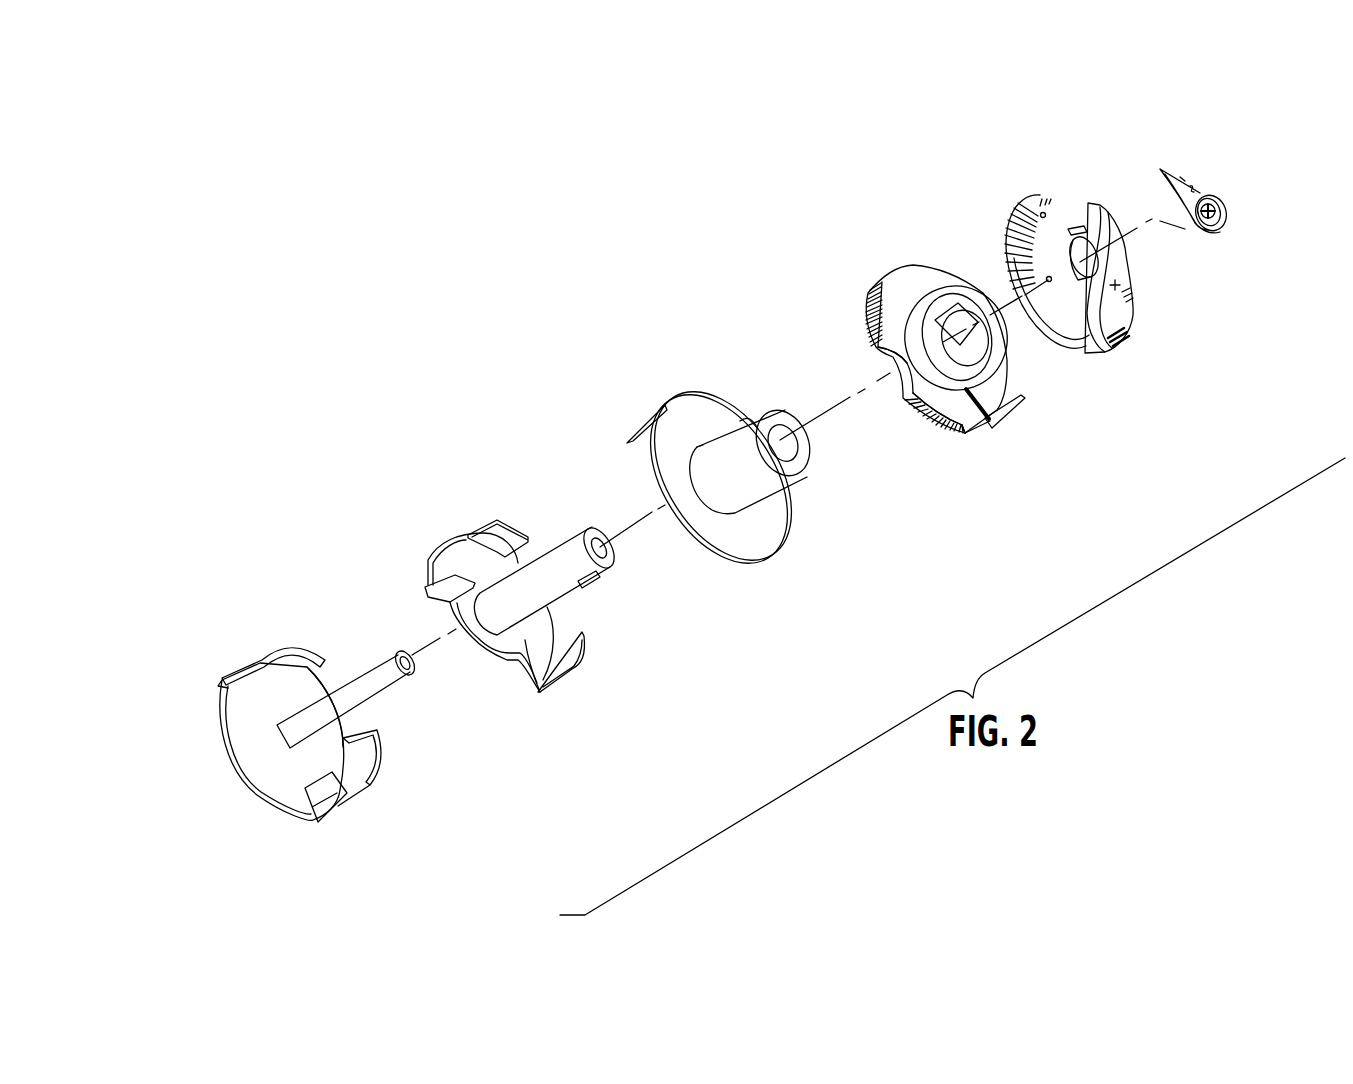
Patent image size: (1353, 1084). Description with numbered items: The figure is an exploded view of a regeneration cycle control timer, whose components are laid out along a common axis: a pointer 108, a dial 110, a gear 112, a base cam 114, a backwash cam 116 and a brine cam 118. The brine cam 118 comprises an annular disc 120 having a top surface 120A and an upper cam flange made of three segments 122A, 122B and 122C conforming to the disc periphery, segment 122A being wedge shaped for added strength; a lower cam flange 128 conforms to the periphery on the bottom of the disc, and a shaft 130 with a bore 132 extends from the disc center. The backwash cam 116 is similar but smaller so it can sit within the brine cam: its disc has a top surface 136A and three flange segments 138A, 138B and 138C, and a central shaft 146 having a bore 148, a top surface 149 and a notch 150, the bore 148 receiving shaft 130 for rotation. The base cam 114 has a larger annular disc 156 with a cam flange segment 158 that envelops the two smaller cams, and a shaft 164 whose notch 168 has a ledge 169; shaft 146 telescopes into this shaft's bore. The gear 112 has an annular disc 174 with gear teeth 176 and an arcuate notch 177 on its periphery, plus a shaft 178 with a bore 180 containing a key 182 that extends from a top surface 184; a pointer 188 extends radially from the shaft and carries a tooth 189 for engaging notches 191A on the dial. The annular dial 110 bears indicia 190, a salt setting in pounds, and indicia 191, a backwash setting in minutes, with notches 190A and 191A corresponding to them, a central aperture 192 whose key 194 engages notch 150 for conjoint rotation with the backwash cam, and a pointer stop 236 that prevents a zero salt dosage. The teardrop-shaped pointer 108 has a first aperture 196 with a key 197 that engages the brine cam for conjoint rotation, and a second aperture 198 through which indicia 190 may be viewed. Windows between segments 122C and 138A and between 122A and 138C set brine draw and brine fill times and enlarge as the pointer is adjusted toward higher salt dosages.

The pointer 108 is at (1262, 249).
The dial 110 is at (1115, 391).
The gear 112 is at (908, 470).
The base cam 114 is at (730, 610).
The backwash cam 116 is at (446, 503).
The brine cam 118 is at (202, 783).
The annular disc 120 is at (287, 806).
The top surface 120A is at (257, 740).
The upper cam flange segment 122A is at (287, 650).
The upper cam flange segment 122B is at (365, 788).
The upper cam flange segment 122C is at (325, 800).
The lower cam flange 128 is at (228, 680).
The shaft 130 is at (345, 673).
The bore 132 is at (410, 670).
The top surface 136A is at (522, 645).
The cam flange segment 138A is at (420, 585).
The cam flange segment 138B is at (432, 555).
The cam flange segment 138C is at (582, 637).
The shaft 146 is at (567, 535).
The bore 148 is at (598, 538).
The top surface 149 is at (612, 575).
The notch 150 is at (607, 583).
The annular disc 156 is at (717, 530).
The cam flange segment 158 is at (643, 427).
The shaft 164 is at (757, 480).
The notch 168 is at (772, 420).
The ledge 169 is at (738, 422).
The annular disc 174 is at (900, 293).
The gear teeth 176 is at (865, 307).
The arcuate notch 177 is at (900, 373).
The shaft 178 is at (915, 337).
The bore 180 is at (966, 322).
The key 182 is at (940, 347).
The top surface 184 is at (968, 377).
The pointer 188 is at (1003, 412).
The tooth 189 is at (1040, 384).
The indicia 190 is at (1006, 250).
The notches 190A is at (1040, 193).
The indicia 191 is at (1127, 285).
The notches 191A is at (1133, 318).
The aperture 192 is at (1128, 350).
The key 194 is at (1076, 235).
The pointer stop 236 is at (1088, 228).
The first aperture 196 is at (1217, 207).
The key 197 is at (1210, 200).
The second aperture 198 is at (1187, 180).